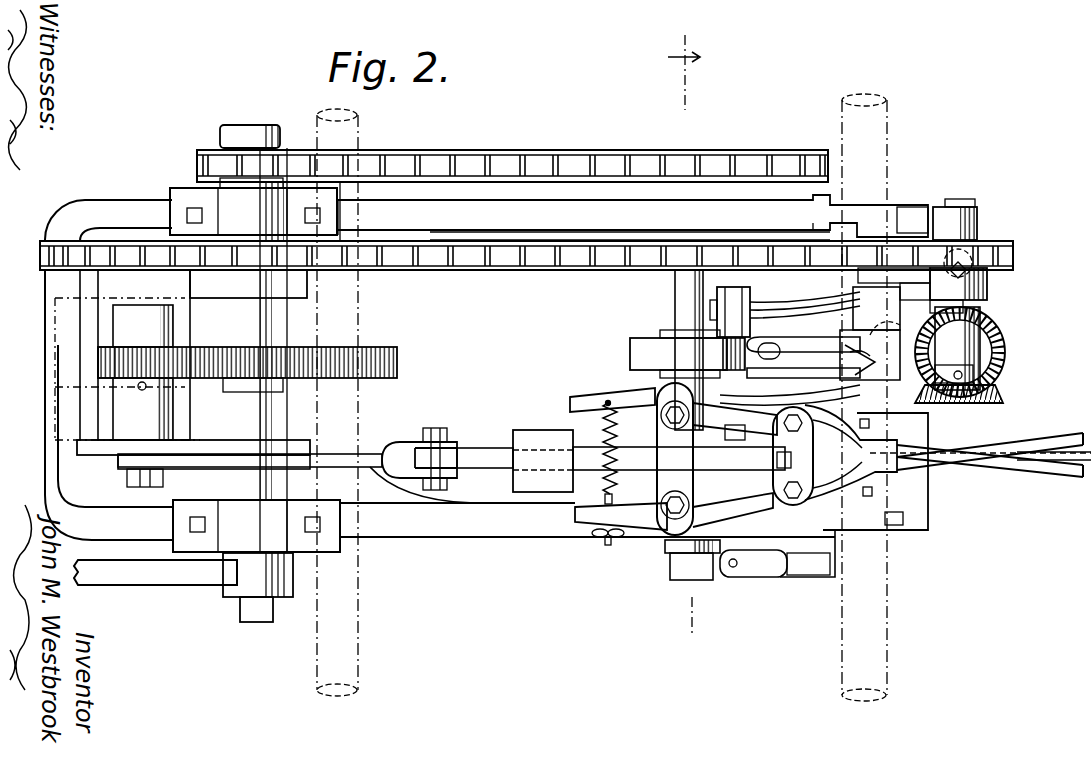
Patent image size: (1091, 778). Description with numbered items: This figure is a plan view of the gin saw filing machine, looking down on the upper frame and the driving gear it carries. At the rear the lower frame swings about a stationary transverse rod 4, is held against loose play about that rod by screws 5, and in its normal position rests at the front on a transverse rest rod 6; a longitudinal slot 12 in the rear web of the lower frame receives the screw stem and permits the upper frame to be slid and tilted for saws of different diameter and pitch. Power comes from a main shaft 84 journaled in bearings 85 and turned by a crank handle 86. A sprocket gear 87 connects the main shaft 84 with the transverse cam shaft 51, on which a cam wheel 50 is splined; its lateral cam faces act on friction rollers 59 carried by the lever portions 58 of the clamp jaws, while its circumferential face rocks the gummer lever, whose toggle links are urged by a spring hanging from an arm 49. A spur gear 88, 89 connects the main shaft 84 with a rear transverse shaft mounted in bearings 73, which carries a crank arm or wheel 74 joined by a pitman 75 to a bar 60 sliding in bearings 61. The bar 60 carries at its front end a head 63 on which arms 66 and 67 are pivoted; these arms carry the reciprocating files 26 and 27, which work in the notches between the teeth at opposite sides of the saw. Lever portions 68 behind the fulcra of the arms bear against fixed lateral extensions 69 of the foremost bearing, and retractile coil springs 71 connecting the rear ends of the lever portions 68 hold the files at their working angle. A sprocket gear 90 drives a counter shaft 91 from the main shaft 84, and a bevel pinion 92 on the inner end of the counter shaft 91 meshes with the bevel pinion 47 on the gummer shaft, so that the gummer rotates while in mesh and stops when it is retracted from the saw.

The stationary transverse rod 4 is at (358, 651).
The screws 5 is at (684, 338).
The transverse rest rod 6 is at (845, 616).
The longitudinal slot 12 is at (60, 353).
The reciprocating file 26 is at (1002, 467).
The reciprocating file 27 is at (1000, 446).
The bevel pinion 47 is at (1000, 346).
The arm 49 is at (879, 311).
The cam wheel 50 is at (645, 351).
The transverse shaft 51 is at (690, 293).
The lever portions 58 is at (815, 322).
The friction rollers 59 is at (750, 292).
The bar 60 is at (585, 458).
The bearings 61 is at (537, 432).
The head 63 is at (832, 540).
The arm 66 is at (880, 445).
The arm 67 is at (738, 510).
The lever portions 68 is at (642, 527).
The lateral extensions 69 is at (670, 483).
The springs 71 is at (596, 455).
The bearings 73 is at (160, 327).
The crank arm or wheel 74 is at (95, 456).
The pitman 75 is at (303, 466).
The main shaft 84 is at (262, 318).
The bearings 85 is at (190, 192).
The crank handle 86 is at (190, 578).
The sprocket gear 87 is at (752, 152).
The spur gear 88 is at (398, 358).
The spur gear 89 is at (98, 366).
The sprocket gear 90 is at (992, 243).
The counter shaft 91 is at (963, 207).
The bevel pinion 92 is at (960, 404).